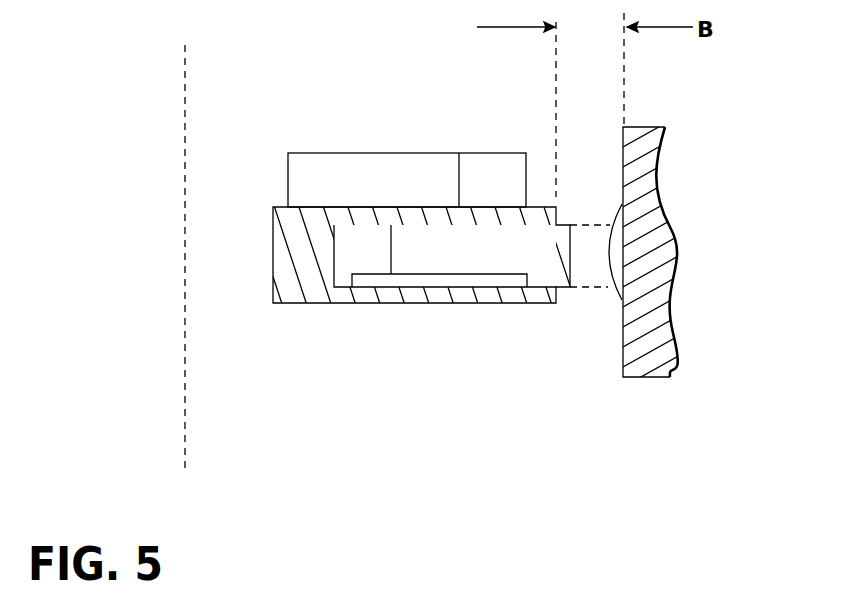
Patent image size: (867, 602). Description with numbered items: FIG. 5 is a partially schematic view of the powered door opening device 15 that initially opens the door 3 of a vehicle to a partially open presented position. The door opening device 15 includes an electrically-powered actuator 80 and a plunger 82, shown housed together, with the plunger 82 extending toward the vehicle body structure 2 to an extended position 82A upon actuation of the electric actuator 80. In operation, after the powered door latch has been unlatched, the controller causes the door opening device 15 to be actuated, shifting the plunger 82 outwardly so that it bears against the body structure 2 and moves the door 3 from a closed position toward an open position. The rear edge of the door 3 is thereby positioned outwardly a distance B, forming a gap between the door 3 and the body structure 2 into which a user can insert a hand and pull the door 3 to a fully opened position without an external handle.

The body structure 2 is at (624, 357).
The door 3 is at (183, 233).
The powered door opening device 15 is at (432, 304).
The electrically-powered actuator 80 is at (385, 170).
The plunger 82 is at (563, 270).
The extended position 82A is at (592, 287).